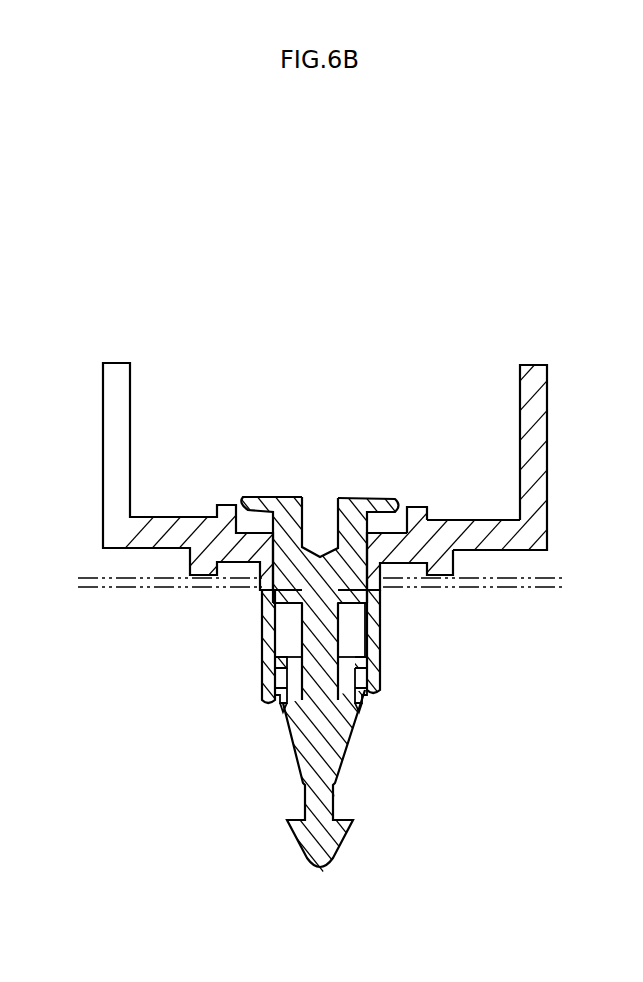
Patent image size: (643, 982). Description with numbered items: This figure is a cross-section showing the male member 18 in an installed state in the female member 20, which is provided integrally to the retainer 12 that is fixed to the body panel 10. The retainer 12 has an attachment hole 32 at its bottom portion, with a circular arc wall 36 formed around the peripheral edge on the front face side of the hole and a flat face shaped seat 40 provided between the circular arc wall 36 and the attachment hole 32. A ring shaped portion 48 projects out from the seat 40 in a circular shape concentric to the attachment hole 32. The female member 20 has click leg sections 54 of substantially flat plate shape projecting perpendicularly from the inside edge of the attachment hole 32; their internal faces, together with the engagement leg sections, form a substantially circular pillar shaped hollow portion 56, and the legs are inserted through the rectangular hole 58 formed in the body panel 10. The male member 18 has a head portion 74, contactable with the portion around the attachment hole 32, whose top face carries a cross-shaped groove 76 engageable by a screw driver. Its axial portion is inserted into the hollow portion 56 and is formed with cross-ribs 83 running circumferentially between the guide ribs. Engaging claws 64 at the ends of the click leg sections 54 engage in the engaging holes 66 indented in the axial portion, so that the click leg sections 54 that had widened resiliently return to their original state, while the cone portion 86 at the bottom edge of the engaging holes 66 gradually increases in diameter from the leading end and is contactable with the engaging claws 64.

The body panel 10 is at (543, 592).
The retainer 12 is at (351, 485).
The male member 18 is at (321, 640).
The female member 20 is at (376, 767).
The attachment hole 32 is at (267, 497).
The circular arc wall 36 is at (546, 450).
The seat 40 is at (495, 522).
The ring shaped portion 48 is at (412, 505).
The click leg section 54 is at (372, 630).
The hollow portion 56 is at (280, 630).
The rectangular hole 58 is at (262, 599).
The engaging claw 64 is at (280, 712).
The engaging hole 66 is at (268, 682).
The head portion 74 is at (390, 498).
The cross-shaped groove 76 is at (333, 512).
The cross-rib 83 is at (378, 598).
The cone portion 86 is at (335, 772).